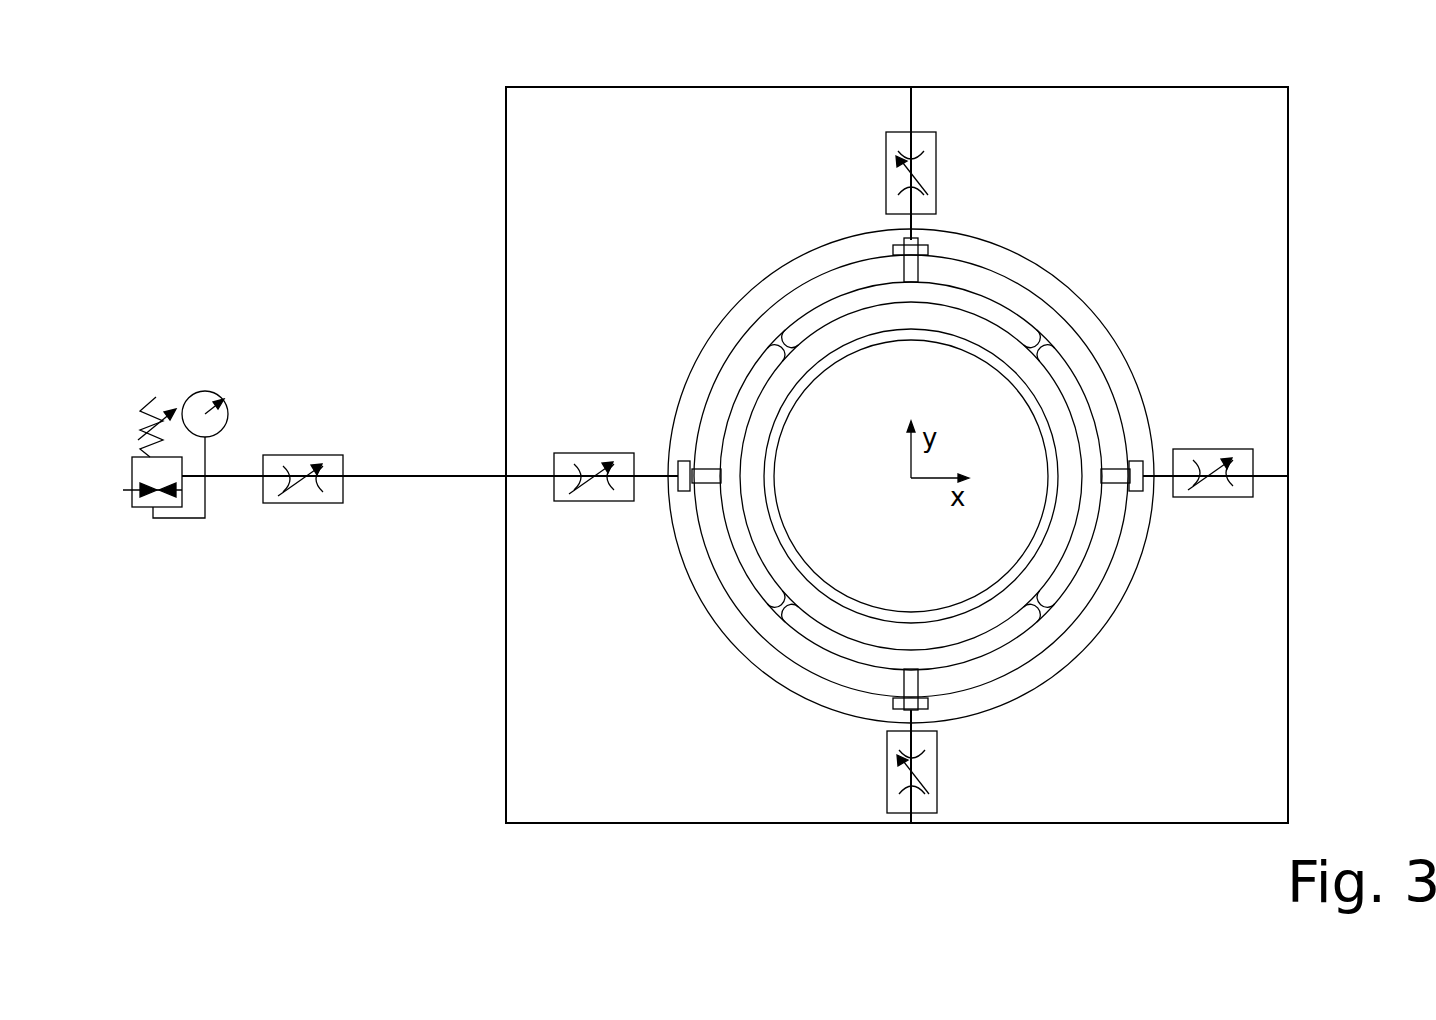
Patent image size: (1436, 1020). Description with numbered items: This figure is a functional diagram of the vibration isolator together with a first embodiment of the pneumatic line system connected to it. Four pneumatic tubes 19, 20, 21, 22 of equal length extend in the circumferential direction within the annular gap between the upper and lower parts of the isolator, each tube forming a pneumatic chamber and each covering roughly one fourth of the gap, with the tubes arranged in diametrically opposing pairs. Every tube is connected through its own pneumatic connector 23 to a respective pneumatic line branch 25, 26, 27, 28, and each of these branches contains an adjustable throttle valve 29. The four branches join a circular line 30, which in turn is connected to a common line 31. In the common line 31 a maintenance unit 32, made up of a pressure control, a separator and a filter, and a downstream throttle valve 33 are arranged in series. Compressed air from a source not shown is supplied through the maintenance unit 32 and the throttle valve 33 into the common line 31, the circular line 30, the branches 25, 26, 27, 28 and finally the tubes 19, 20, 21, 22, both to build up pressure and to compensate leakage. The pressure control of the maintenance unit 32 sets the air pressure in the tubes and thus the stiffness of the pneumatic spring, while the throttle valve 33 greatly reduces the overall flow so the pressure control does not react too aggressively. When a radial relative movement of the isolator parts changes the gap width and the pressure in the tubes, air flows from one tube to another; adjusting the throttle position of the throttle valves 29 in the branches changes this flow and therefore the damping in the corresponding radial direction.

The pneumatic tube 19 is at (1018, 323).
The pneumatic tube 20 is at (813, 637).
The pneumatic tube 21 is at (1067, 583).
The pneumatic tube 22 is at (738, 398).
The pneumatic connector 23 is at (903, 267).
The pneumatic line branch 25 is at (912, 110).
The pneumatic line branch 26 is at (1265, 470).
The pneumatic line branch 27 is at (912, 822).
The pneumatic line branch 28 is at (533, 480).
The adjustable throttle valve 29 is at (1213, 500).
The circular line 30 is at (1107, 86).
The common line 31 is at (423, 477).
The maintenance unit 32 is at (168, 533).
The throttle valve 33 is at (290, 452).